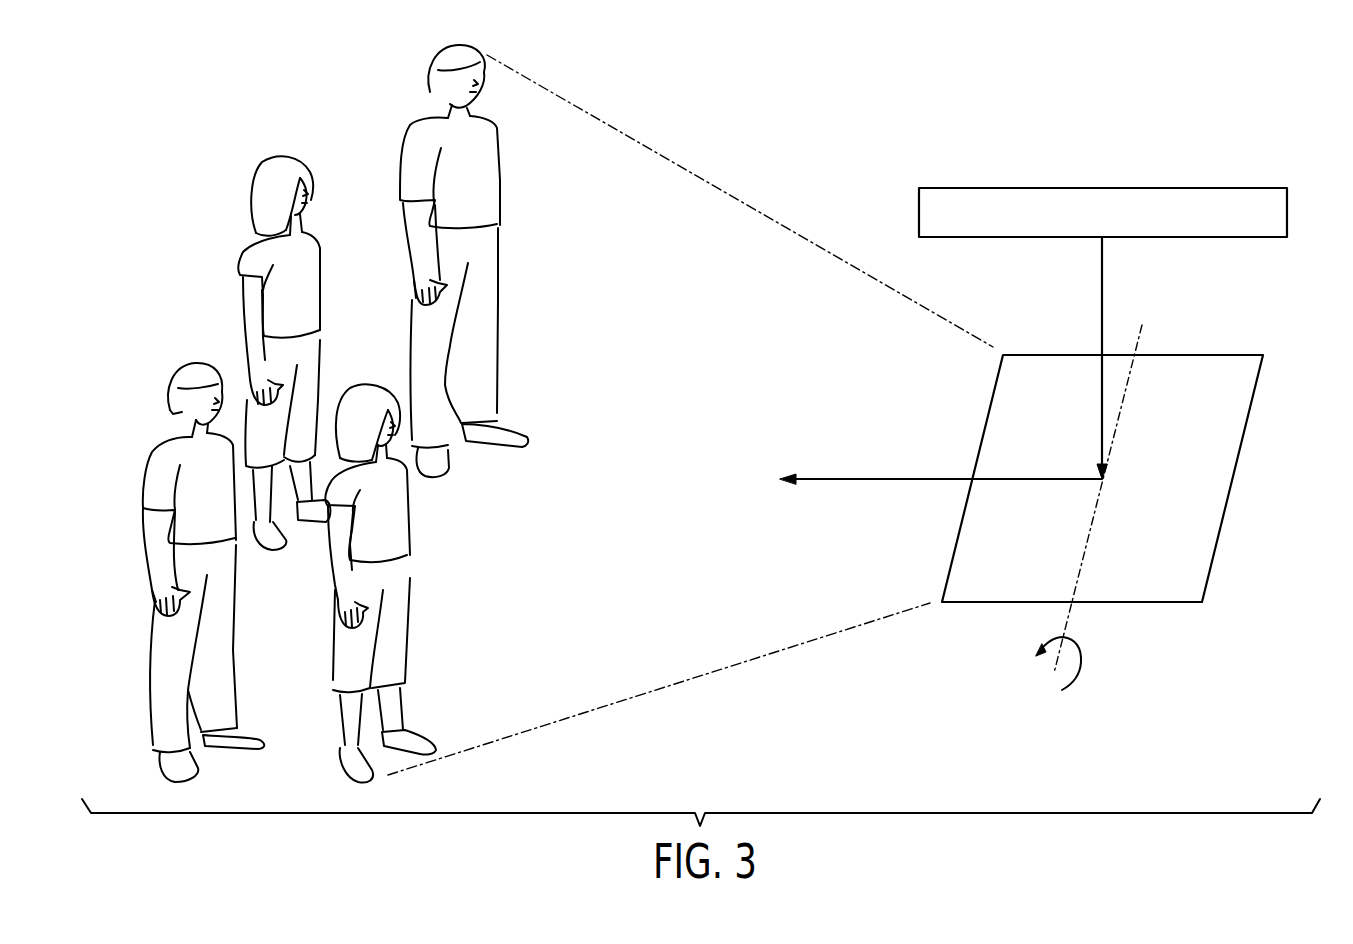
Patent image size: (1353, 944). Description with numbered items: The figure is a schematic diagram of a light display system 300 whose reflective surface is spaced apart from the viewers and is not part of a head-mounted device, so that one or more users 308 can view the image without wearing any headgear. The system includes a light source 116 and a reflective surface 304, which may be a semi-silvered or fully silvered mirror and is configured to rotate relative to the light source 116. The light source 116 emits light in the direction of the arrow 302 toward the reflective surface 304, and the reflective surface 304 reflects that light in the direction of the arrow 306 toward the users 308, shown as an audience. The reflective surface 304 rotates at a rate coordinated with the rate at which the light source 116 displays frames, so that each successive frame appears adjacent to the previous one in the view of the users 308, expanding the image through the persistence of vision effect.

The light display system 300 is at (227, 110).
The light source 116 is at (1103, 188).
The arrow 302 is at (1103, 293).
The reflective surface 304 is at (1238, 480).
The arrow 306 is at (915, 476).
The users 308 is at (557, 388).